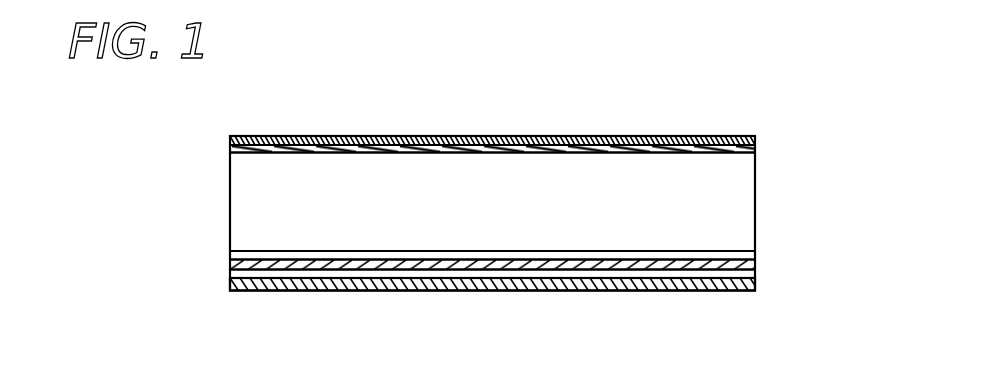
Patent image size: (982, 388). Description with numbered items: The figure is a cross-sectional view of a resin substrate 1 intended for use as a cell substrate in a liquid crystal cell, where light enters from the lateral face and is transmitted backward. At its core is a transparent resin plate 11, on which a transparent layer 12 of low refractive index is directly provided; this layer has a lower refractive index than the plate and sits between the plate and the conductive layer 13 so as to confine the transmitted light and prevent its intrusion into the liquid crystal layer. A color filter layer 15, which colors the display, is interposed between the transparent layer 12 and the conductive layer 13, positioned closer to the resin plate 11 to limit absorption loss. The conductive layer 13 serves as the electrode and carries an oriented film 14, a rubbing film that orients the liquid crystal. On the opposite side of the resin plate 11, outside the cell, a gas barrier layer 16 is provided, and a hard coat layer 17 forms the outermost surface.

The resin substrate 1 is at (826, 150).
The transparent resin plate 11 is at (756, 202).
The transparent layer of low refractive index 12 is at (756, 251).
The conductive layer 13 is at (756, 272).
The oriented film 14 is at (756, 283).
The color filter layer 15 is at (756, 260).
The gas barrier layer 16 is at (756, 150).
The hard coat layer 17 is at (756, 138).